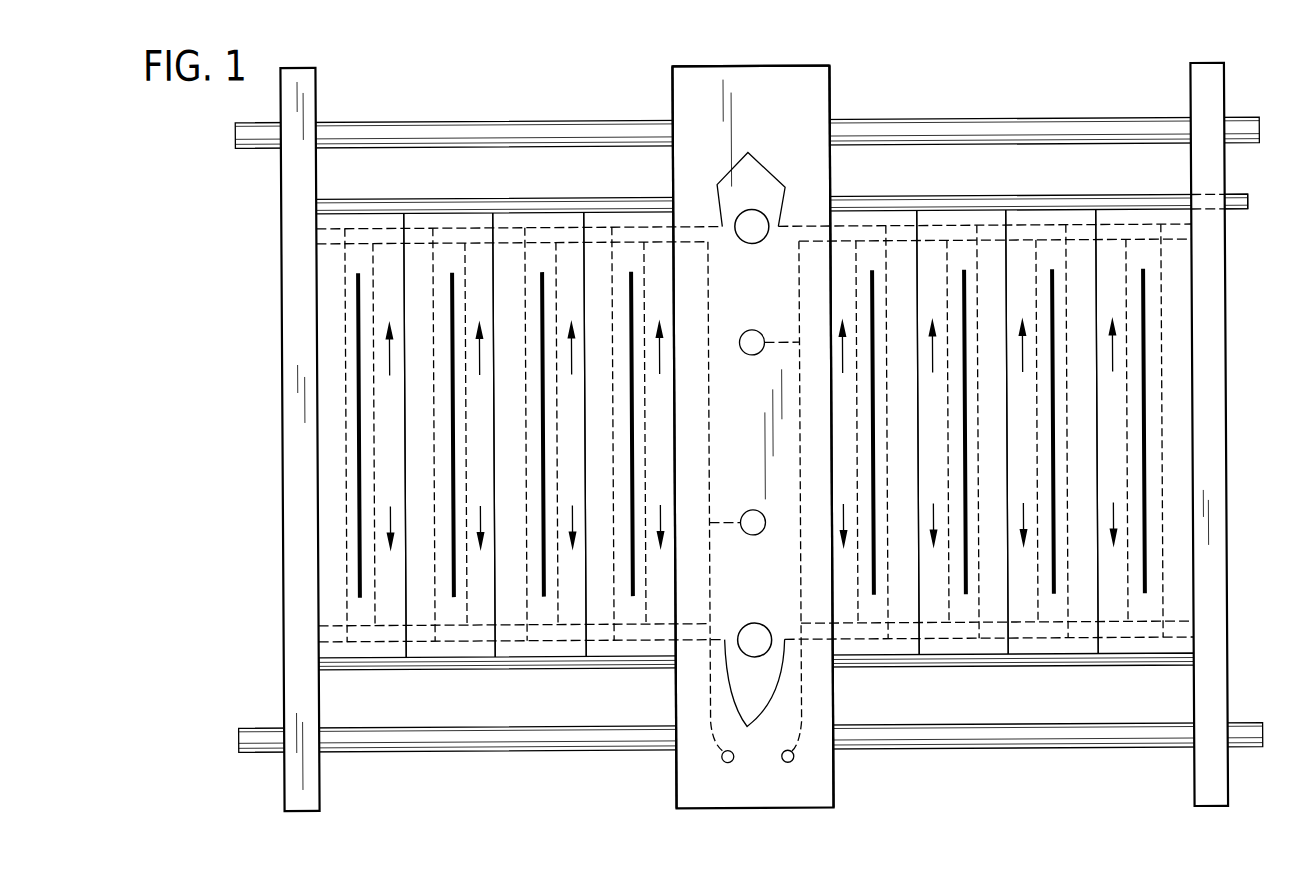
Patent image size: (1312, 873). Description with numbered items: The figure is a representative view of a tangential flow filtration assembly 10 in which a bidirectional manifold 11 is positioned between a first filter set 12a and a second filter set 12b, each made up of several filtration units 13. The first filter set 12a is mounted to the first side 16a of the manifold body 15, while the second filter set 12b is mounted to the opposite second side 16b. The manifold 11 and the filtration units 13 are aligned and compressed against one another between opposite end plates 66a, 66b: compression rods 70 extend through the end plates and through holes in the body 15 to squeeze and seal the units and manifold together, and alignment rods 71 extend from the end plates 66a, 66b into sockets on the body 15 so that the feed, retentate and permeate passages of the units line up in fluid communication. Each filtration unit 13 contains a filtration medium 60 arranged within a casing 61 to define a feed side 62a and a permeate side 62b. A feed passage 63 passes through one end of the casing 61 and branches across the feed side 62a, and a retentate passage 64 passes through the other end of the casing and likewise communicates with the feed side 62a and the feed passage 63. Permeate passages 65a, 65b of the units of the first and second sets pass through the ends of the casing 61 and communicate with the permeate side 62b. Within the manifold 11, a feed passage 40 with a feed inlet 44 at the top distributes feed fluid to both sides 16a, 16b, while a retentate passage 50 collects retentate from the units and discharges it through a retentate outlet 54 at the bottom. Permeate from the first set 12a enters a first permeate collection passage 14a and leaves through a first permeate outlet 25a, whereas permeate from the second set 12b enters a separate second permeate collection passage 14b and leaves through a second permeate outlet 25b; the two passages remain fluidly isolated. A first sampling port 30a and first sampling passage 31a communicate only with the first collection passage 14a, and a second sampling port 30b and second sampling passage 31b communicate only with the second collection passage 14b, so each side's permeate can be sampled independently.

The filtration assembly 10 is at (514, 81).
The manifold 11 is at (770, 58).
The first filter set 12a is at (457, 166).
The second filter set 12b is at (1007, 165).
The filtration unit 13 is at (330, 523).
The first permeate collection passage 14a is at (709, 424).
The second permeate collection passage 14b is at (800, 470).
The body 15 is at (719, 67).
The first side 16a is at (674, 97).
The second side 16b is at (832, 96).
The first permeate outlet 25a is at (751, 522).
The second permeate outlet 25b is at (750, 341).
The first sampling port 30a is at (726, 763).
The second sampling port 30b is at (786, 763).
The first sampling passage 31a is at (718, 733).
The second permeate sampling passage 31b is at (793, 735).
The feed passage 40 is at (742, 203).
The feed inlet 44 is at (756, 221).
The retentate passage 50 is at (755, 693).
The retentate outlet 54 is at (754, 657).
The filtration medium 60 is at (540, 439).
The casing 61 is at (330, 308).
The feed side 62a is at (451, 562).
The permeate side 62b is at (454, 582).
The feed passage 63 is at (482, 226).
The retentate passage 64 is at (546, 640).
The permeate passage 65a is at (595, 242).
The permeate passage 65b is at (987, 242).
The first end plate 66a is at (298, 349).
The second end plate 66b is at (1207, 540).
The compression rod 70 is at (358, 126).
The alignment rod 71 is at (350, 197).